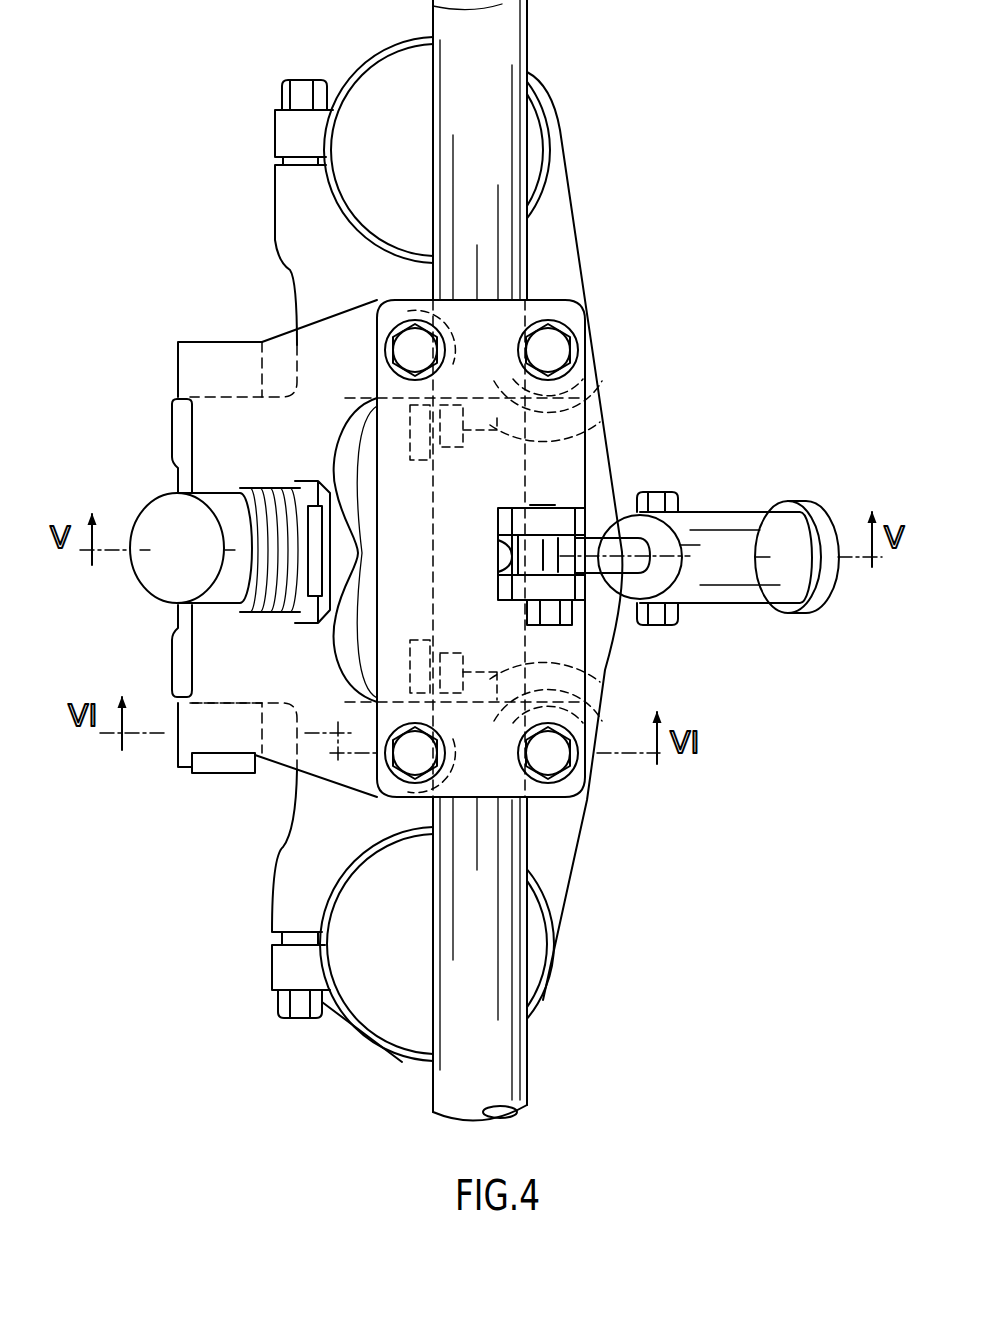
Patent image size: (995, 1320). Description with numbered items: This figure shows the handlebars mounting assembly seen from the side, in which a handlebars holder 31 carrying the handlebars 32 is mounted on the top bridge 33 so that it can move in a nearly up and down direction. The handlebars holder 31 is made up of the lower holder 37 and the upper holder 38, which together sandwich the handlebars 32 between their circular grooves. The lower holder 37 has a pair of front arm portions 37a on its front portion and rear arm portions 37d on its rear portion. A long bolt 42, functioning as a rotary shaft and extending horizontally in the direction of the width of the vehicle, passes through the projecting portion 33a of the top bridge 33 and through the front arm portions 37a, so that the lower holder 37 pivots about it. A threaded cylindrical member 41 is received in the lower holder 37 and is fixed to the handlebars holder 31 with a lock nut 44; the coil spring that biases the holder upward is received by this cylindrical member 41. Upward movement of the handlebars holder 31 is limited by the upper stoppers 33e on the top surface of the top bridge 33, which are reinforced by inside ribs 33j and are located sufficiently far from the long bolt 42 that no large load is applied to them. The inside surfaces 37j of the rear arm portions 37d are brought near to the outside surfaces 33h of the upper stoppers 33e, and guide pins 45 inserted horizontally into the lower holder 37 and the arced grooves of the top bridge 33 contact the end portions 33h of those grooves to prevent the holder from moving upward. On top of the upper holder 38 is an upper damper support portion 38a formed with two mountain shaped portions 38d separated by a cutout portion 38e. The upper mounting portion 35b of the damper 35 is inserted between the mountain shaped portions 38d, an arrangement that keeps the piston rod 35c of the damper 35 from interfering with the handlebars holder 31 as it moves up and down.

The handlebars holder 31 is at (538, 292).
The handlebars 32 is at (530, 40).
The top bridge 33 is at (268, 884).
The projecting portion 33a is at (172, 435).
The upper stoppers 33e is at (585, 440).
The outside surfaces 33h is at (485, 387).
The reinforcing inside ribs 33j is at (352, 430).
The damper 35 is at (735, 581).
The upper mounting portion 35b is at (585, 565).
The piston rod 35c is at (648, 556).
The lower holder 37 is at (336, 307).
The front arm portions 37a is at (178, 372).
The rear arm portions 37d is at (580, 378).
The inside surfaces 37j is at (585, 410).
The upper holder 38 is at (548, 644).
The upper damper support portion 38a is at (572, 500).
The mountain shaped portions 38d is at (510, 520).
The cutout portion 38e is at (500, 570).
The cylindrical member 41 is at (140, 582).
The long bolt 42 is at (225, 777).
The lock nut 44 is at (296, 500).
The guide pins 45 is at (432, 300).